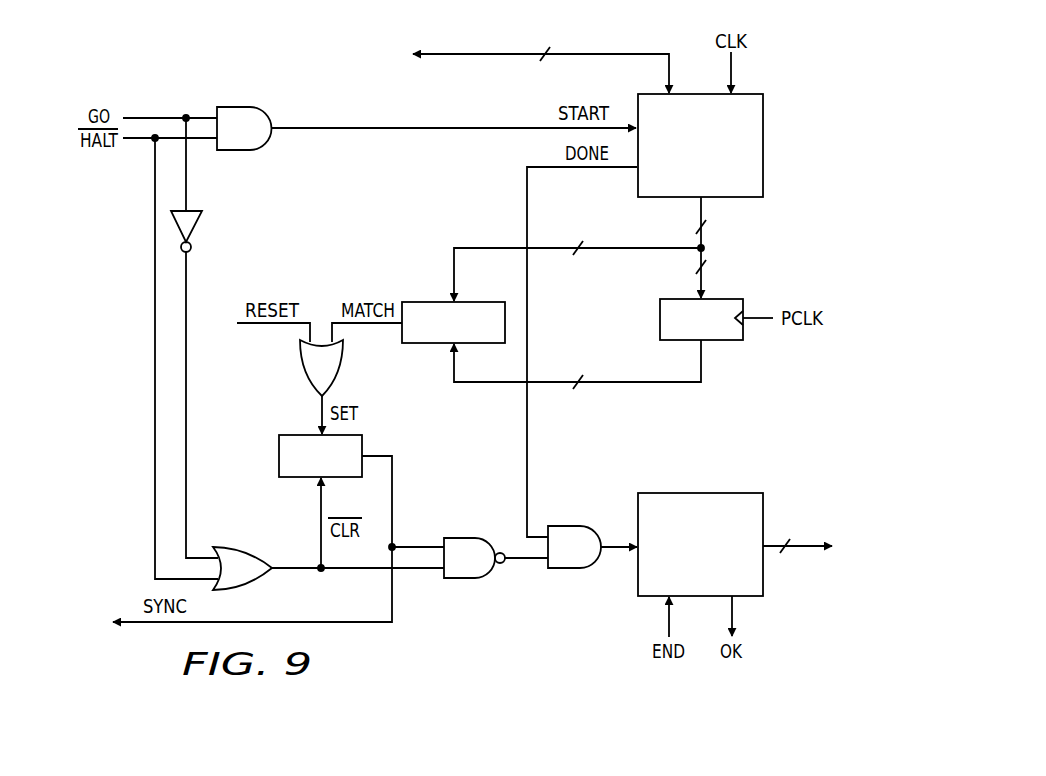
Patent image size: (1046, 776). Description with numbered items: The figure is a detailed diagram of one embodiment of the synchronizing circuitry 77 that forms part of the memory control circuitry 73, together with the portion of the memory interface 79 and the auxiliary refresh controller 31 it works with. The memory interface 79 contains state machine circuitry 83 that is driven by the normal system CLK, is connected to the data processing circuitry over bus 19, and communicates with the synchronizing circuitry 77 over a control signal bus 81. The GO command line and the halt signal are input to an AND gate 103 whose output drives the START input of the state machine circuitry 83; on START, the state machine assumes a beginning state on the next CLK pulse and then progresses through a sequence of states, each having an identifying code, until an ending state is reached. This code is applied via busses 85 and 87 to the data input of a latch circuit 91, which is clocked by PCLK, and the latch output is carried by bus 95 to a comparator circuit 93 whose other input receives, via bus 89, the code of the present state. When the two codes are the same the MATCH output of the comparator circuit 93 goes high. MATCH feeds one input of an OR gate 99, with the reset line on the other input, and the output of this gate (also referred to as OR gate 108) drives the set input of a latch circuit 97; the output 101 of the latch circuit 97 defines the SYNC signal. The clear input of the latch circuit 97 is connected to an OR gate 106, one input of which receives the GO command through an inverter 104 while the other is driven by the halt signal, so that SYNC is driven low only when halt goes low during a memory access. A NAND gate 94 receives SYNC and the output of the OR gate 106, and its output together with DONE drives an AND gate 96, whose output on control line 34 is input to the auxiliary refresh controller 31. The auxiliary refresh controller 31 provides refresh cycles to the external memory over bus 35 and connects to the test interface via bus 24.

The synchronizing circuitry 77 is at (149, 71).
The AND gate 103 is at (231, 107).
The inverter 104 is at (198, 226).
The bus 19 is at (495, 56).
The control signal bus 81 is at (366, 127).
The memory interface 79 is at (803, 84).
The state machine circuitry 83 is at (765, 137).
The bus 85 is at (701, 210).
The bus 87 is at (709, 270).
The bus 89 is at (496, 249).
The latch circuit 91 is at (722, 341).
The comparator circuit 93 is at (421, 344).
The bus 95 is at (618, 383).
The latch circuit 97 is at (279, 455).
The OR gate 99 is at (301, 357).
The output 101 is at (394, 495).
The OR gate 106 is at (226, 547).
The OR gate 108 is at (299, 567).
The NAND gate 94 is at (453, 579).
The AND gate 96 is at (566, 569).
The control line 34 is at (616, 546).
The auxiliary refresh controller 31 is at (704, 493).
The bus 35 is at (805, 545).
The bus 24 is at (664, 621).
The memory control circuitry 73 is at (491, 668).